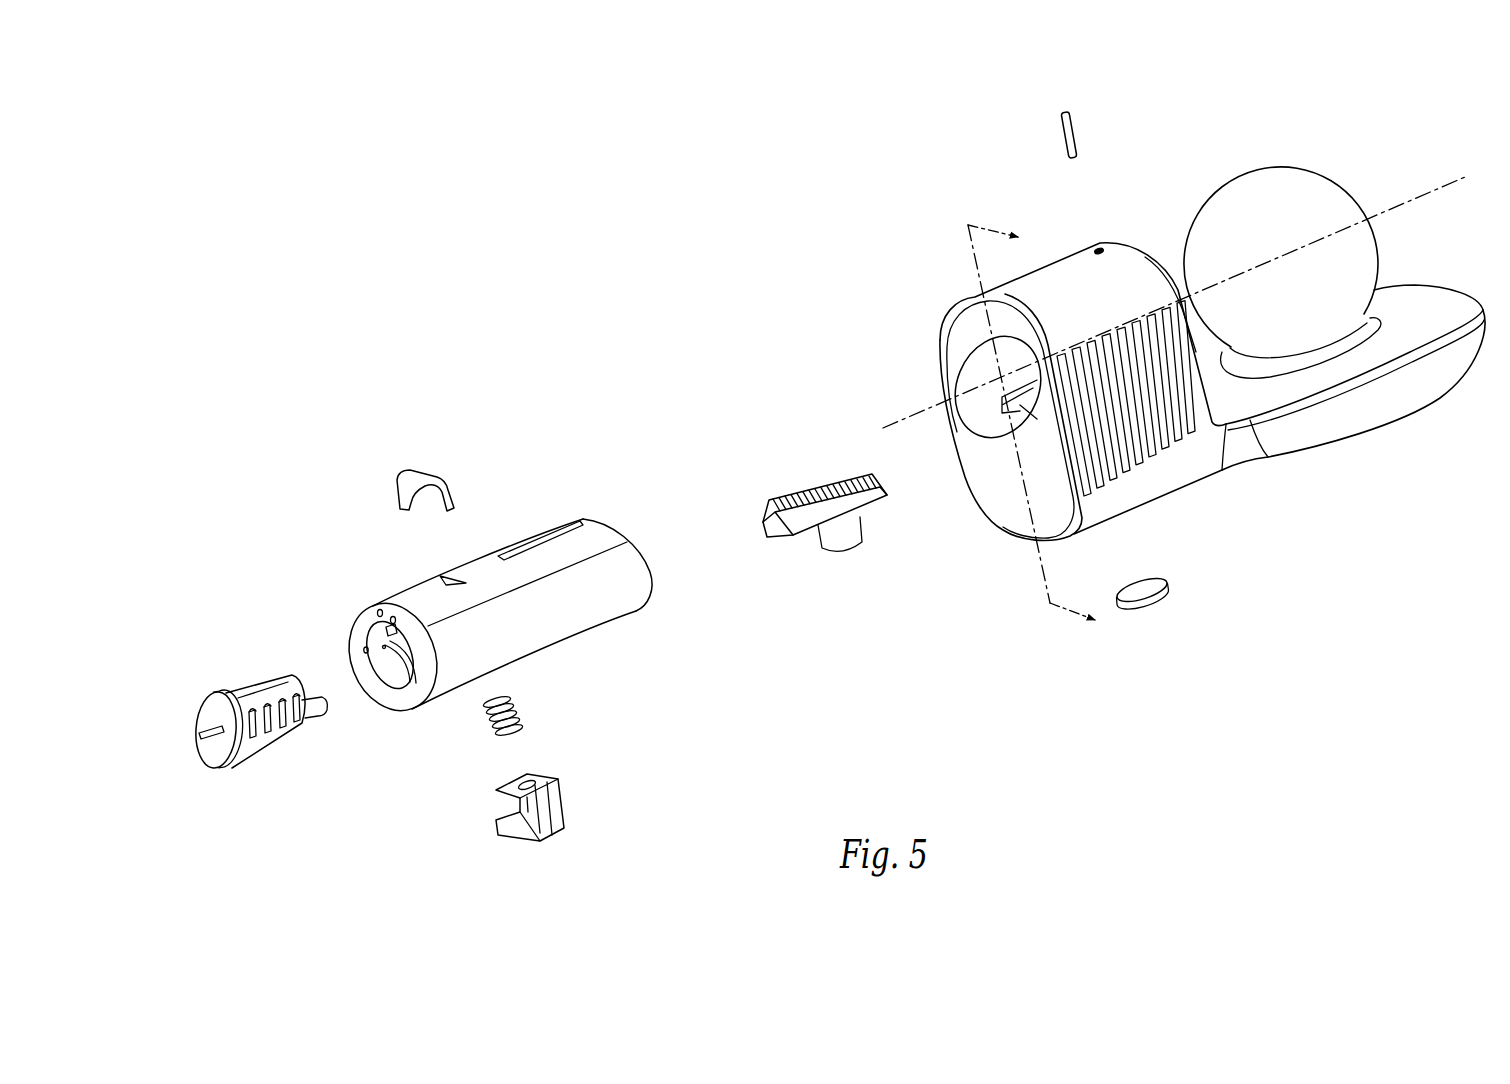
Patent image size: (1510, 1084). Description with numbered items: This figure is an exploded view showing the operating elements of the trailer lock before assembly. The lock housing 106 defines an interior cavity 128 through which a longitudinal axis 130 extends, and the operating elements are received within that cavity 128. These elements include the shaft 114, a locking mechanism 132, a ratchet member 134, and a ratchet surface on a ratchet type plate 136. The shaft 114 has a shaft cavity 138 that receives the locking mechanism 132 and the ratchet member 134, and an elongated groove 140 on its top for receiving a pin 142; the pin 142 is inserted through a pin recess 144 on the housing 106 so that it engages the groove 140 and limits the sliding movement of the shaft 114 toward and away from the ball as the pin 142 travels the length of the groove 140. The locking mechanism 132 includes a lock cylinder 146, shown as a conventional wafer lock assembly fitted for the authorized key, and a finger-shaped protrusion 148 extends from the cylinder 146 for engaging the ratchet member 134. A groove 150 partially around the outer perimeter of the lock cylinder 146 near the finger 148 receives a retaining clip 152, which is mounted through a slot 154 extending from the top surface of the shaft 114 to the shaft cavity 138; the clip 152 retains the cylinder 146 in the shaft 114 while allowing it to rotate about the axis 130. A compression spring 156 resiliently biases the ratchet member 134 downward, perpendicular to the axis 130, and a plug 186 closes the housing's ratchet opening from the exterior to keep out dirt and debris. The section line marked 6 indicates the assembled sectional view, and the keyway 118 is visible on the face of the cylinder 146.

The section line 6- 6 is at (1174, 416).
The lock housing 106 is at (1045, 275).
The shaft 114 is at (600, 597).
The keyway 118 is at (212, 738).
The interior cavity 128 is at (983, 355).
The longitudinal axis 130 is at (1418, 193).
The locking mechanism 132 is at (236, 668).
The ratchet member 134 is at (555, 797).
The ratchet type plate 136 is at (842, 535).
The shaft cavity 138 is at (381, 649).
The elongated groove 140 is at (540, 530).
The pin 142 is at (1062, 130).
The pin recess 144 is at (1099, 248).
The lock cylinder 146 is at (258, 740).
The protrusion 148 is at (315, 715).
The groove 150 is at (285, 681).
The retaining clip 152 is at (427, 470).
The slot 154 is at (452, 575).
The compression spring 156 is at (487, 723).
The plug 186 is at (1152, 600).